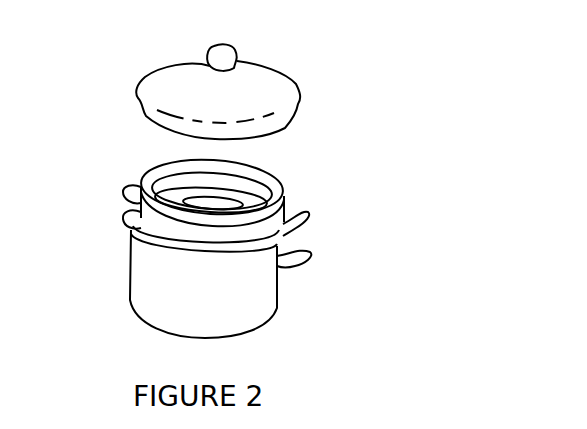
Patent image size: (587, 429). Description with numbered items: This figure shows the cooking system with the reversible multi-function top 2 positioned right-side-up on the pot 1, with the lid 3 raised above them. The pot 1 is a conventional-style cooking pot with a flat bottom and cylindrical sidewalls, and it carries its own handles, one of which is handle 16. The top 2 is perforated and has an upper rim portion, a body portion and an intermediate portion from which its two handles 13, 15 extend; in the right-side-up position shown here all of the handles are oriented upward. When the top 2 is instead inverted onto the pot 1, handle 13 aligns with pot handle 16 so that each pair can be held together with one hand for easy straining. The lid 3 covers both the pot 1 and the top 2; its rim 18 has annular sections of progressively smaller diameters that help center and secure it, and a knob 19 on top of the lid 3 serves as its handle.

The pot 1 is at (112, 264).
The reversible multi-function top 2 is at (323, 201).
The lid 3 is at (313, 91).
The handle 13 is at (291, 231).
The handle 15 is at (124, 189).
The handle 16 is at (126, 220).
The rim 18 is at (288, 133).
The knob 19 is at (238, 51).